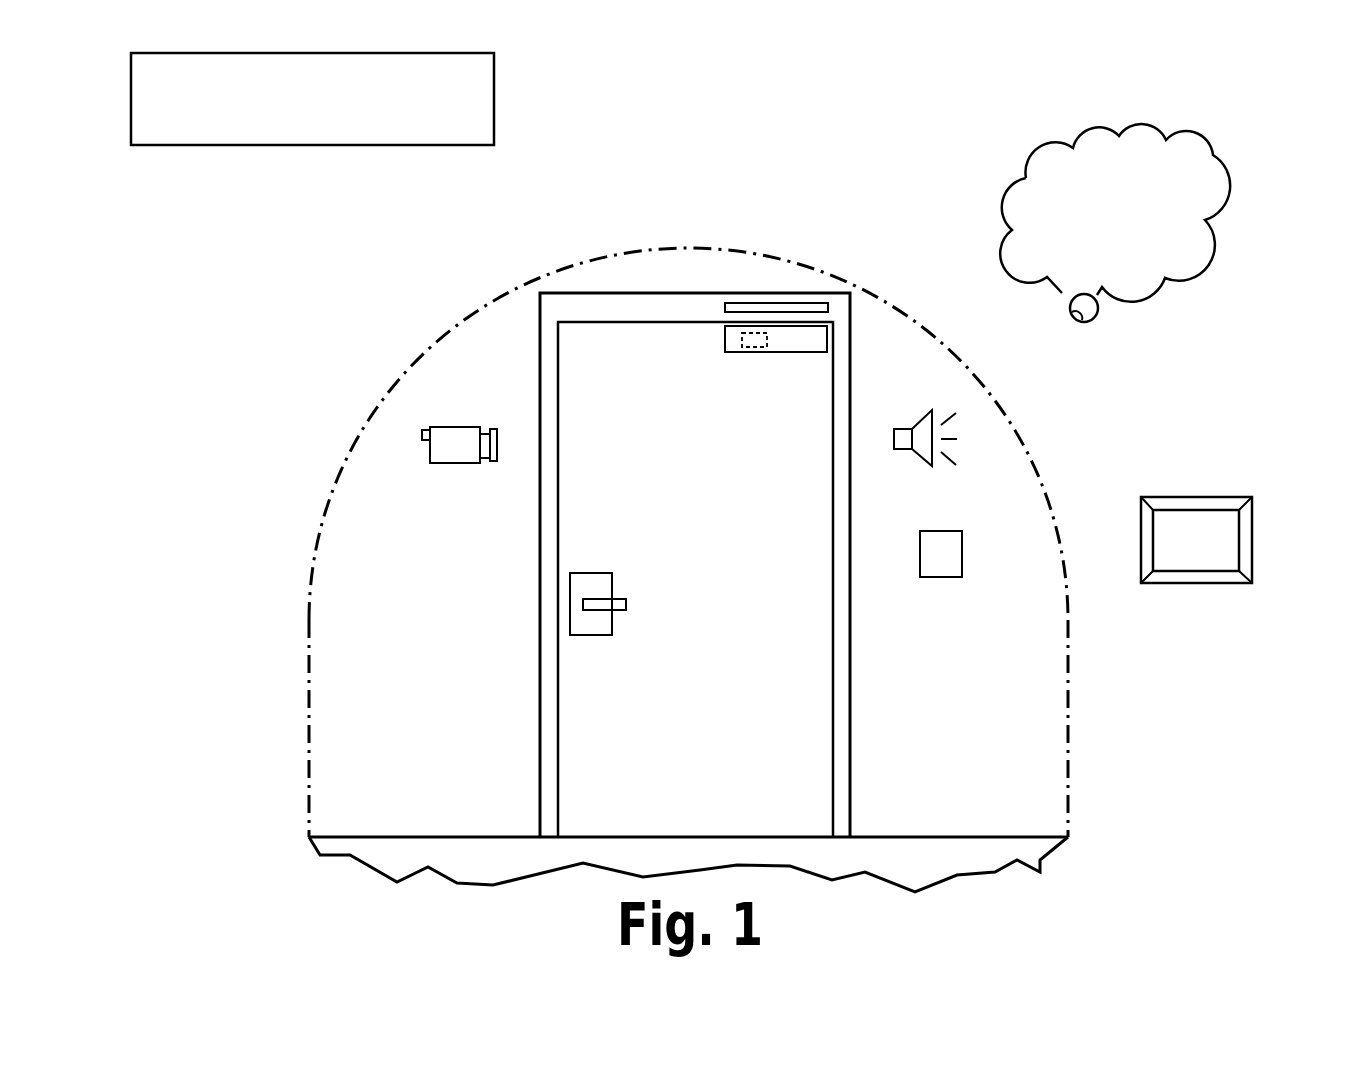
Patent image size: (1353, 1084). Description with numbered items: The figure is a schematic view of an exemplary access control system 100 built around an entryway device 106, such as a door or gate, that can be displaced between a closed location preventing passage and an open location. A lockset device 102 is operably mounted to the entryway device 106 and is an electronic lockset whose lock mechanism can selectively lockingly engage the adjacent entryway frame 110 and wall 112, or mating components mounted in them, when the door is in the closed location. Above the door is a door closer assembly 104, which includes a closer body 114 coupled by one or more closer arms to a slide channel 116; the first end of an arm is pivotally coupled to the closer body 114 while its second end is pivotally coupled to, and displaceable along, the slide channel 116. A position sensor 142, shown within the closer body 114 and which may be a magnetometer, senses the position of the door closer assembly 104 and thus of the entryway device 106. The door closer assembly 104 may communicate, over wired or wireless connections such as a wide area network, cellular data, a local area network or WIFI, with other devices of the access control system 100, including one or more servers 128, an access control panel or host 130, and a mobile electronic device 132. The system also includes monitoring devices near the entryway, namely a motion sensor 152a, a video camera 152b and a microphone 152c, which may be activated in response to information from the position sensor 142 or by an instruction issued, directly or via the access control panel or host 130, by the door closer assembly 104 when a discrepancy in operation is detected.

The access control system 100 is at (928, 100).
The lockset device 102 is at (612, 627).
The door closer assembly 104 is at (710, 336).
The entryway device 106 is at (678, 540).
The entryway frame 110 is at (845, 693).
The wall 112 is at (938, 805).
The closer body 114 is at (797, 343).
The slide channel 116 is at (747, 306).
The server 128 is at (1197, 145).
The access control panel or host 130 is at (494, 107).
The mobile electronic device 132 is at (1173, 497).
The position sensor 142 is at (752, 342).
The motion sensor 152a is at (962, 555).
The video camera 152b is at (457, 463).
The microphone 152c is at (923, 458).